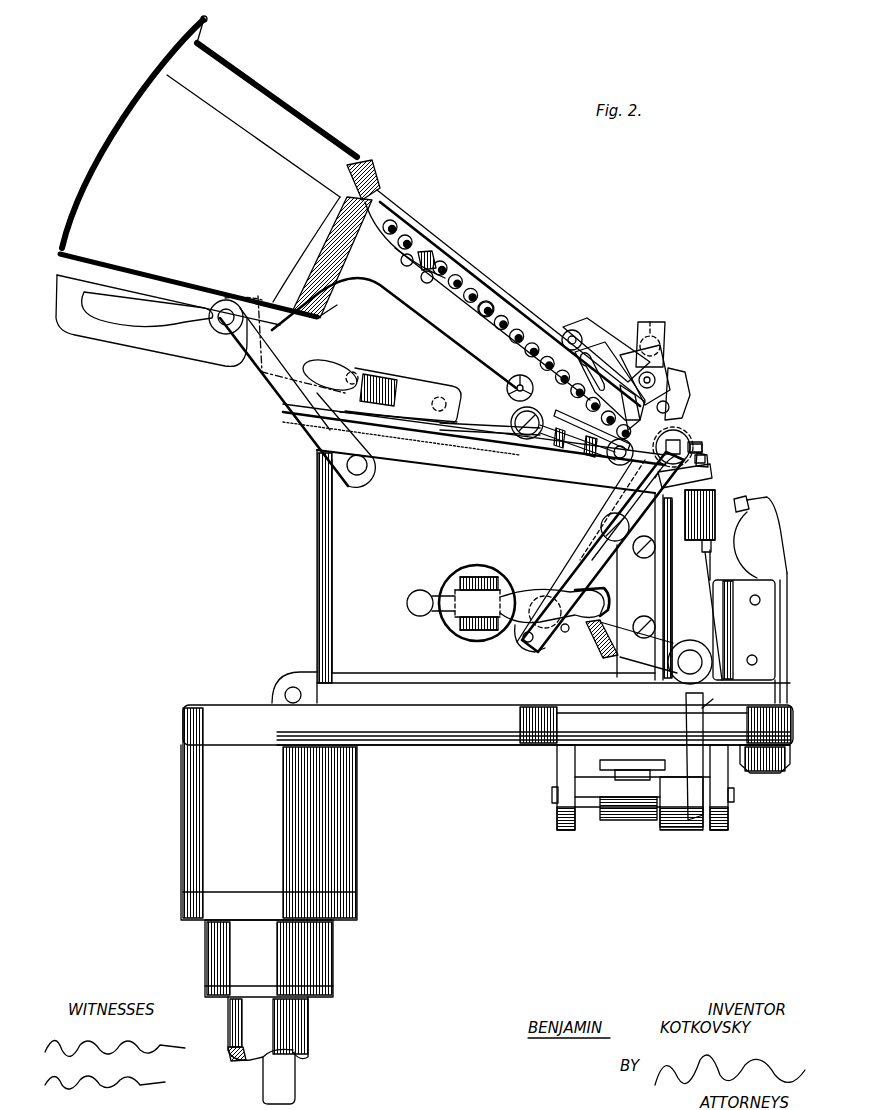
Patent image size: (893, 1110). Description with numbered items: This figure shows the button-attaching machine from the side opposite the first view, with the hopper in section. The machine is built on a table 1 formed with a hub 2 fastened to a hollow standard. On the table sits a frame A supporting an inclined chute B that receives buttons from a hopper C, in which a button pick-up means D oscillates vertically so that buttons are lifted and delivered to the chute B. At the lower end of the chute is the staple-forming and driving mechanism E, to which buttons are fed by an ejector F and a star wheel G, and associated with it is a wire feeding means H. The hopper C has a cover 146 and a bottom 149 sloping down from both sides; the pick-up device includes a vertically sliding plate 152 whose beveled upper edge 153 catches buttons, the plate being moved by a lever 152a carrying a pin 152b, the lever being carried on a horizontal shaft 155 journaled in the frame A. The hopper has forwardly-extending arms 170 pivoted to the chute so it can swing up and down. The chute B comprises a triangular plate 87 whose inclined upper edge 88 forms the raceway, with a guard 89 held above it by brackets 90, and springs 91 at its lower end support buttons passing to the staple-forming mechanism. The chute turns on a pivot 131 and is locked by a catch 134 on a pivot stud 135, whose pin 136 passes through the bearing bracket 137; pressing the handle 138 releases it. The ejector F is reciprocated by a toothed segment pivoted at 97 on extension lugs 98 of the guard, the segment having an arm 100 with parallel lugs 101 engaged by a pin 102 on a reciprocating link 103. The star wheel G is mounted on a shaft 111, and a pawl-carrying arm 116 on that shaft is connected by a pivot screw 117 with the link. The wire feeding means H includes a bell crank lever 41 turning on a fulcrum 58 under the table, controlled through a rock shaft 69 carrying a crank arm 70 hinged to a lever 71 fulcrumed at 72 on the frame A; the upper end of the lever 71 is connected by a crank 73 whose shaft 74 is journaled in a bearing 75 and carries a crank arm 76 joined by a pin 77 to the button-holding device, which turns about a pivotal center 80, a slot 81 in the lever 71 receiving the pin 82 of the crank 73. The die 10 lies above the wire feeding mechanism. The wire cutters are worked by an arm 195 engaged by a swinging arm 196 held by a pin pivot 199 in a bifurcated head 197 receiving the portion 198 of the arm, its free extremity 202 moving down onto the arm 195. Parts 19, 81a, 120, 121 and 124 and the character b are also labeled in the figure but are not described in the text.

The table 1 is at (467, 728).
The hub 2 is at (269, 906).
The die 10 is at (717, 500).
The tip of hook arm 19 is at (740, 512).
The bell crank lever 41 is at (692, 790).
The fulcrum 58 is at (735, 797).
The rock shaft 69 is at (567, 632).
The crank arm 70 is at (540, 643).
The lever 71 is at (587, 552).
The fulcrum 72 is at (597, 529).
The crank 73 is at (617, 465).
The shaft 74 is at (613, 461).
The bearing 75 is at (565, 448).
The crank arm 76 is at (647, 466).
The pin 77 is at (597, 507).
The pivotal center 80 is at (527, 450).
The slot 81 is at (705, 456).
The rail edge 81a is at (500, 442).
The pin 82 is at (702, 446).
The triangular plate 87 is at (508, 392).
The inclined upper edges 88 is at (510, 349).
The guard 89 is at (497, 296).
The brackets 90 is at (553, 362).
The springs 91 is at (603, 428).
The pivot 97 is at (663, 377).
The extension lugs 98 is at (631, 407).
The arm 100 is at (660, 370).
The parallel lugs 101 is at (665, 340).
The pin 102 is at (653, 322).
The link 103 is at (603, 343).
The star wheel shaft 111 is at (512, 411).
The pawl-carrying arm 116 is at (683, 380).
The pivot screw 117 is at (673, 400).
The catch 120 is at (708, 458).
The rod 121 is at (570, 440).
The plate 124 is at (714, 470).
The pivot 131 is at (352, 372).
The catch 134 is at (415, 390).
The pivot stud 135 is at (383, 375).
The pin 136 is at (432, 404).
The bearing bracket 137 is at (437, 387).
The handle 138 is at (312, 366).
The cover 146 is at (302, 113).
The bottom 149 is at (197, 282).
The vertically sliding plate 152 is at (73, 322).
The lever 152a is at (297, 417).
The pin 152b is at (226, 327).
The upper edges 153 is at (292, 163).
The horizontal shaft 155 is at (360, 475).
The forwardly-extending arms 170 is at (394, 333).
The arm 195 is at (649, 652).
The swinging arm 196 is at (523, 591).
The bifurcated head 197 is at (467, 576).
The portion 198 is at (477, 603).
The pin pivot 199 is at (487, 575).
The free extremity 202 is at (613, 601).
The frame A is at (531, 576).
The inclined chute B is at (487, 326).
The hopper C is at (106, 150).
The button pick-up means D is at (268, 170).
The staple-forming and driving mechanism E is at (710, 491).
The ejector F is at (610, 381).
The star wheel G is at (676, 432).
The wire feeding means H is at (708, 466).
The chain link b is at (483, 282).